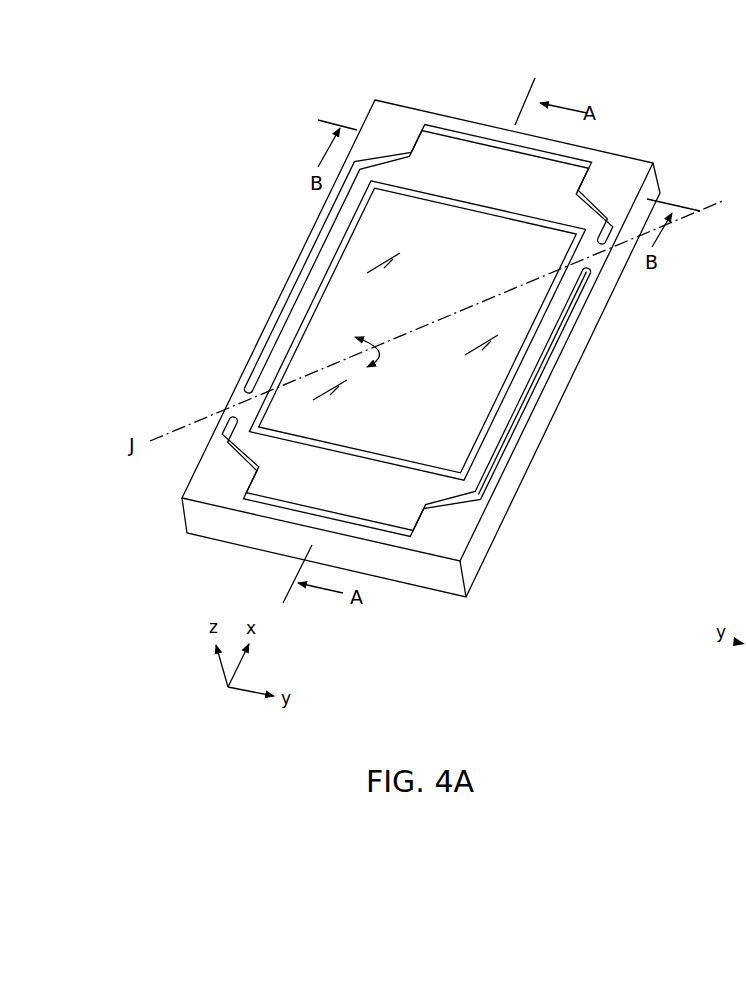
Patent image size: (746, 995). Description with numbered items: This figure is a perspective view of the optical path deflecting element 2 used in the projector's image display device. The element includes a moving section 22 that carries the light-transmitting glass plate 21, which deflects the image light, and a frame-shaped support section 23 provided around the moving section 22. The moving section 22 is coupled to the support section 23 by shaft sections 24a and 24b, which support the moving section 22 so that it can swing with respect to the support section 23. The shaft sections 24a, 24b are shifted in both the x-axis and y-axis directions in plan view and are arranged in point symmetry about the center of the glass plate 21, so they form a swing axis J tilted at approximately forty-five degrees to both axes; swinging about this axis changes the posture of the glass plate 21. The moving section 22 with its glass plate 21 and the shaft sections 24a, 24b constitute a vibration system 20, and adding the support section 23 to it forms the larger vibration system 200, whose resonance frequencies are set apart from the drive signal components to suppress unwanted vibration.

The optical path deflecting element 2 is at (415, 322).
The vibration system 20 is at (386, 160).
The glass plate 21 is at (340, 287).
The moving section 22 is at (440, 153).
The frame-shaped support section 23 is at (231, 477).
The shaft section 24a is at (233, 403).
The shaft section 24b is at (590, 262).
The vibration system 200 is at (415, 279).